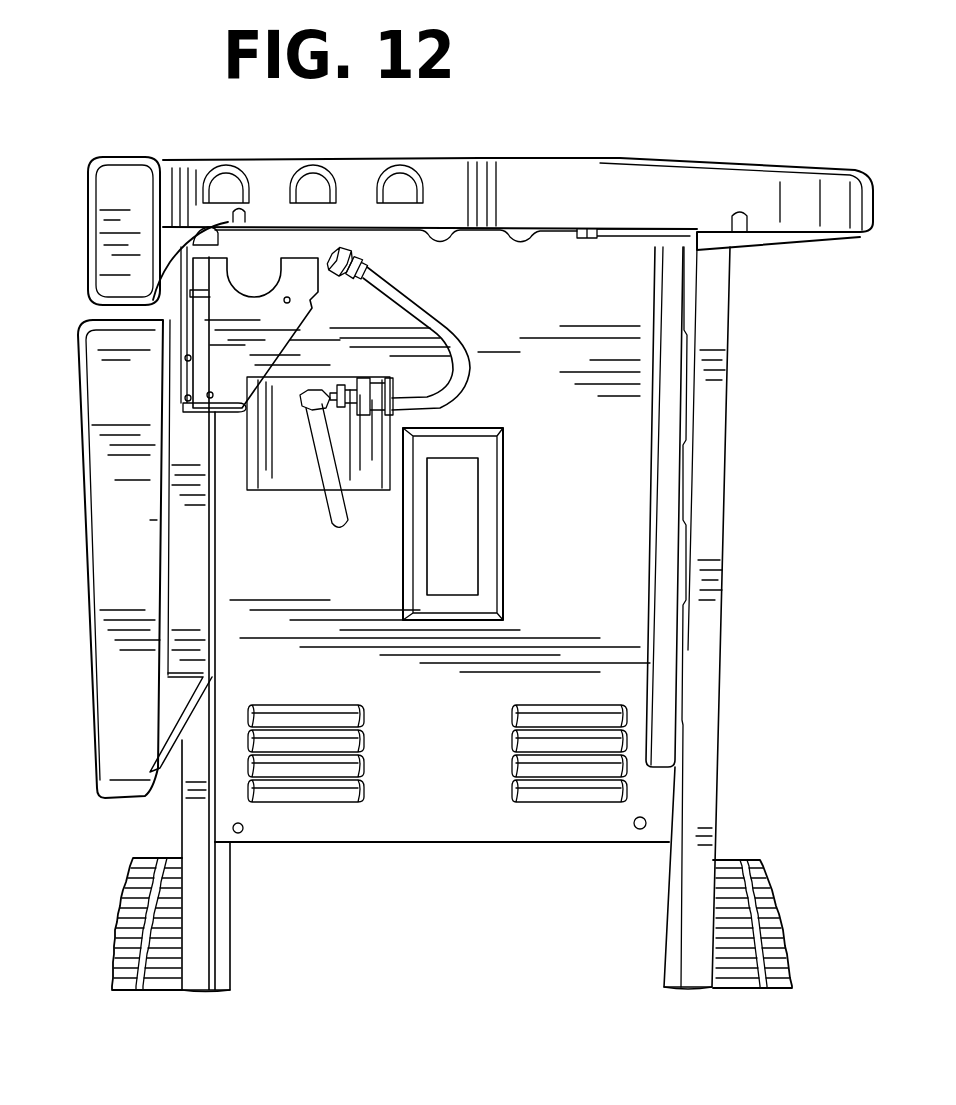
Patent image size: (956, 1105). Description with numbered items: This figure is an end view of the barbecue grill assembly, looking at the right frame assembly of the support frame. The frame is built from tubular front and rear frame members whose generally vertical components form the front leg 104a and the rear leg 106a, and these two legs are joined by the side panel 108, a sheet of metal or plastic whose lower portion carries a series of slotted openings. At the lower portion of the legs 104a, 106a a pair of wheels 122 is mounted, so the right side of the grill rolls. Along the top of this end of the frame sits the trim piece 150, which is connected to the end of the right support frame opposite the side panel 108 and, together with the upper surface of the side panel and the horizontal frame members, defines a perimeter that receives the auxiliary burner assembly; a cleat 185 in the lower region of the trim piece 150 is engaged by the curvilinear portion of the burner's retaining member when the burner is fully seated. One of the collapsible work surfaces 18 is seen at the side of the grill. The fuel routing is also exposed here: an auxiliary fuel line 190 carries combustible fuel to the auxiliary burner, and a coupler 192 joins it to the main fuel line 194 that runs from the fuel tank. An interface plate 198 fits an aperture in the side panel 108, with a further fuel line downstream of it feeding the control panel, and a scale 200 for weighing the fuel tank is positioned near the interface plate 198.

The collapsible work surface 18 is at (113, 600).
The leg 104a is at (197, 840).
The leg 106a is at (715, 488).
The side panel 108 is at (443, 805).
The wheels 122 is at (115, 930).
The trim piece 150 is at (690, 191).
The cleat 185 is at (527, 238).
The auxiliary fuel line 190 is at (462, 343).
The coupler 192 is at (364, 385).
The main fuel line 194 is at (331, 510).
The interface plate 198 is at (257, 463).
The scale 200 is at (470, 510).